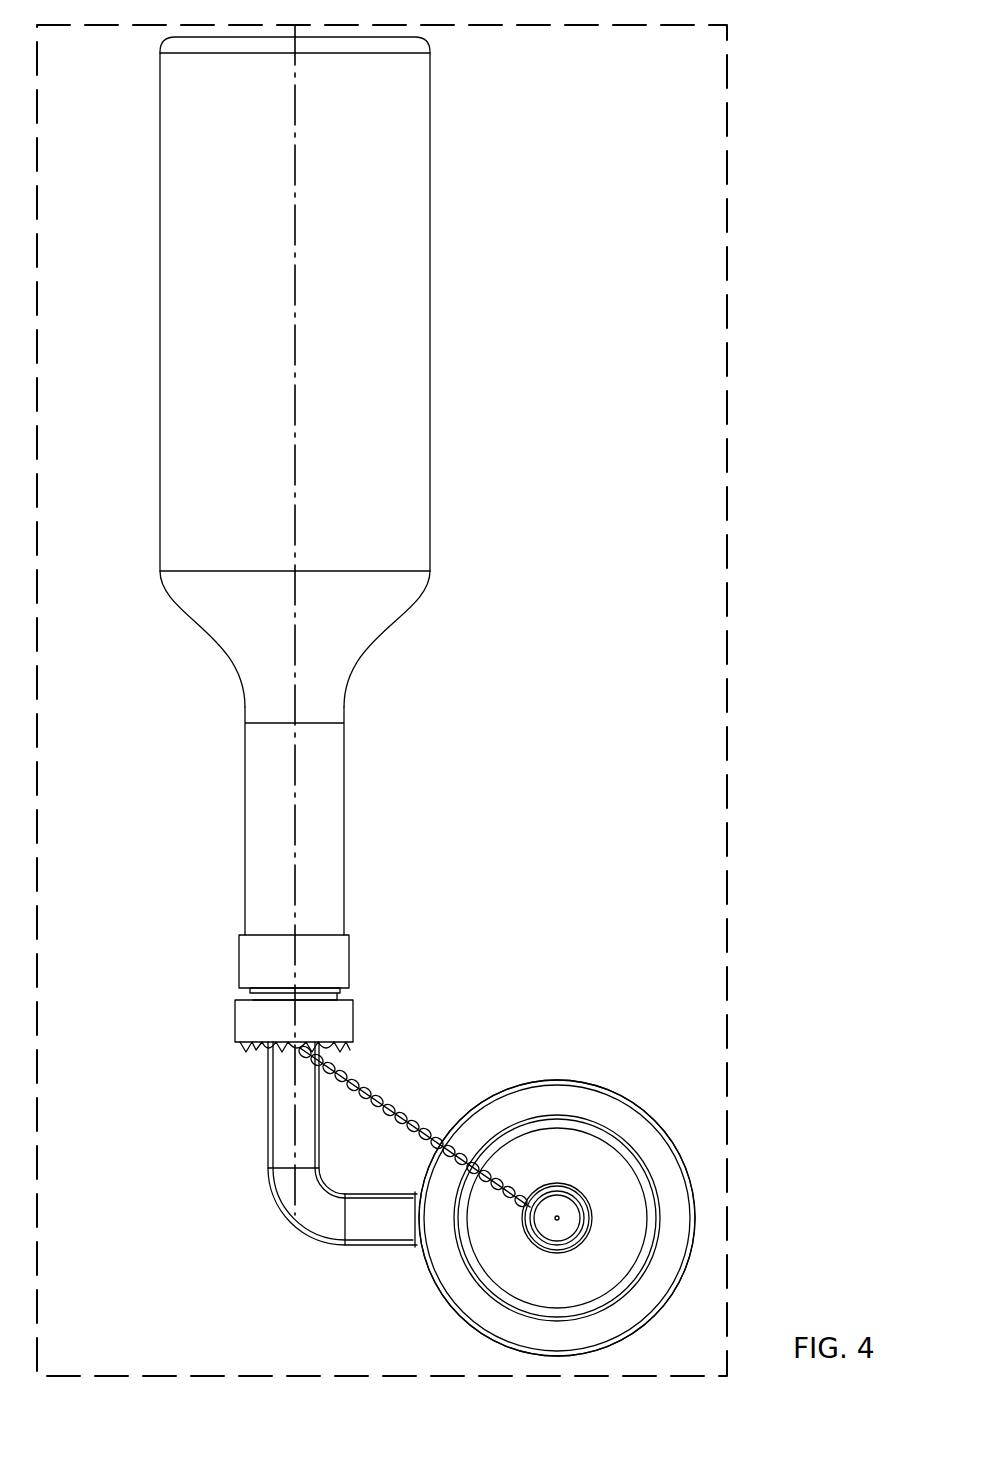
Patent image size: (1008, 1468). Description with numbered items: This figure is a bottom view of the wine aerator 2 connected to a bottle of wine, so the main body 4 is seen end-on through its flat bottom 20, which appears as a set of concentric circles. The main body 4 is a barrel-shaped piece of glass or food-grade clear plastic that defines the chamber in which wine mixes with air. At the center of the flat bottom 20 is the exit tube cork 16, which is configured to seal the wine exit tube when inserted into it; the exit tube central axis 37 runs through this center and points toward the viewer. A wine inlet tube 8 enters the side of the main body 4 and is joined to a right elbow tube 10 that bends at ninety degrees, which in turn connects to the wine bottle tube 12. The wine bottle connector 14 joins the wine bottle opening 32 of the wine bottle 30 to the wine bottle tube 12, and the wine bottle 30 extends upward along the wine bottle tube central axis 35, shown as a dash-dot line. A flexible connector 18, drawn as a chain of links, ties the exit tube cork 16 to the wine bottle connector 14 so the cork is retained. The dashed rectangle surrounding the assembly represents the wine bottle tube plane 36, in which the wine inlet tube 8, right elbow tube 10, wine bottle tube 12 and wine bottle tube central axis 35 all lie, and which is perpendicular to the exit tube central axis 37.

The wine aerator 2 is at (655, 1092).
The main body 4 is at (550, 1080).
The wine inlet tube 8 is at (383, 1245).
The right elbow tube 10 is at (290, 1220).
The wine bottle tube 12 is at (268, 1113).
The wine bottle connector 14 is at (240, 1020).
The exit tube cork 16 is at (565, 1218).
The flexible connector 18 is at (390, 1096).
The flat bottom 20 is at (594, 1162).
The wine bottle 30 is at (190, 292).
The wine bottle opening 32 is at (238, 958).
The wine bottle tube central axis 35 is at (296, 861).
The wine bottle tube plane 36 is at (727, 641).
The exit tube central axis 37 is at (550, 1224).